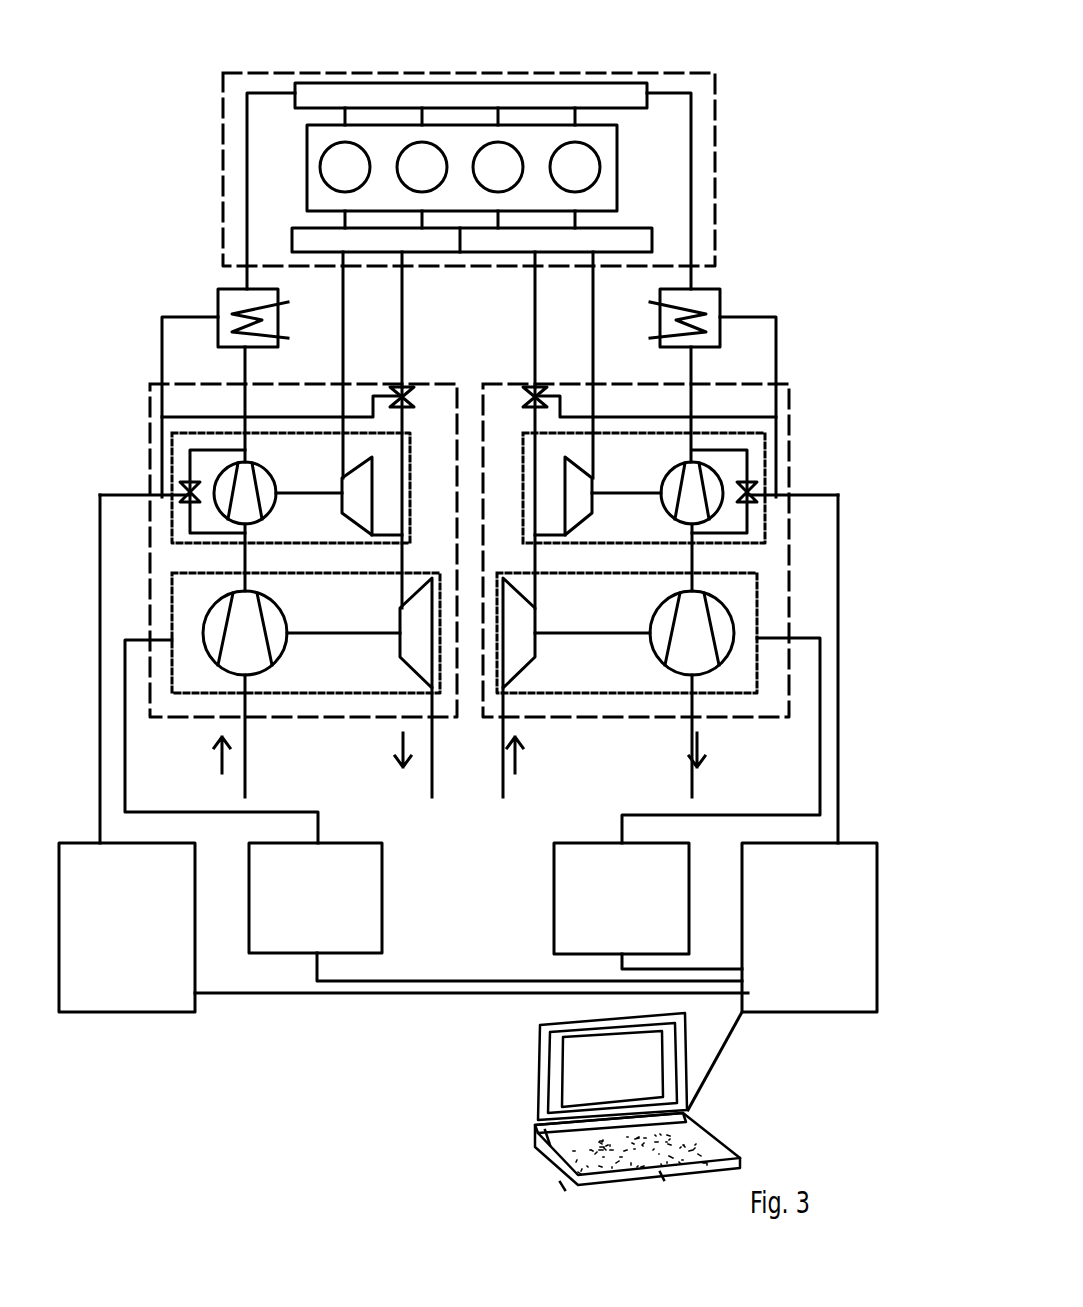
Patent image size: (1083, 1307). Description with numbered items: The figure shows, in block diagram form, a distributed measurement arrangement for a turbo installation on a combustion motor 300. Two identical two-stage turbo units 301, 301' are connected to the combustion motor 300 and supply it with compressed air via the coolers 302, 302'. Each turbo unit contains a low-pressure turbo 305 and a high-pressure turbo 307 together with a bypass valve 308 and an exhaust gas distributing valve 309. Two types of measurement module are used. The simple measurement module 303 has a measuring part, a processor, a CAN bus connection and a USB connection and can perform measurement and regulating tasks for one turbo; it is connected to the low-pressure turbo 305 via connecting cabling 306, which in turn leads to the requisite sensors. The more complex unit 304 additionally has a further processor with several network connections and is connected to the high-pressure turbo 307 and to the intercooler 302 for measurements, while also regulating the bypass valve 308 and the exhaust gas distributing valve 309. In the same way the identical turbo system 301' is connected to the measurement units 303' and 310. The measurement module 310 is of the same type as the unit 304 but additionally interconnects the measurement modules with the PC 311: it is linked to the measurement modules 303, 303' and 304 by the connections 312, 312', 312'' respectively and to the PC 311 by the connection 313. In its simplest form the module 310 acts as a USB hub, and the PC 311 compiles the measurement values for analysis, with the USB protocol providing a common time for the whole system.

The combustion motor 300 is at (716, 73).
The two-stage turbo unit 301 is at (266, 579).
The two-stage turbo unit 301' is at (660, 578).
The cooler 302 is at (203, 356).
The cooler 302' is at (722, 347).
The simple measurement module 303 is at (315, 898).
The measurement unit 303' is at (621, 898).
The complex measurement unit 304 is at (127, 927).
The low-pressure turbo 305 is at (307, 697).
The connecting cabling 306 is at (175, 810).
The high-pressure turbo 307 is at (241, 494).
The bypass valve 308 is at (187, 487).
The exhaust gas distributing valve 309 is at (405, 385).
The measurement module 310 is at (809, 927).
The PC 311 is at (537, 1145).
The connection 312 is at (529, 942).
The connection 312' is at (682, 927).
The connection 312'' is at (471, 1034).
The connection 313 is at (713, 1065).